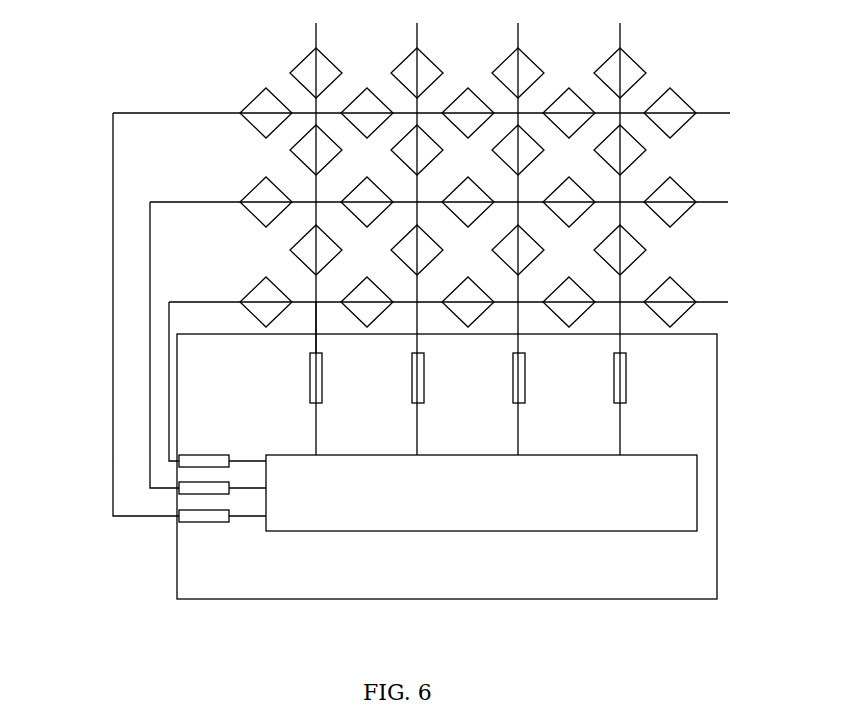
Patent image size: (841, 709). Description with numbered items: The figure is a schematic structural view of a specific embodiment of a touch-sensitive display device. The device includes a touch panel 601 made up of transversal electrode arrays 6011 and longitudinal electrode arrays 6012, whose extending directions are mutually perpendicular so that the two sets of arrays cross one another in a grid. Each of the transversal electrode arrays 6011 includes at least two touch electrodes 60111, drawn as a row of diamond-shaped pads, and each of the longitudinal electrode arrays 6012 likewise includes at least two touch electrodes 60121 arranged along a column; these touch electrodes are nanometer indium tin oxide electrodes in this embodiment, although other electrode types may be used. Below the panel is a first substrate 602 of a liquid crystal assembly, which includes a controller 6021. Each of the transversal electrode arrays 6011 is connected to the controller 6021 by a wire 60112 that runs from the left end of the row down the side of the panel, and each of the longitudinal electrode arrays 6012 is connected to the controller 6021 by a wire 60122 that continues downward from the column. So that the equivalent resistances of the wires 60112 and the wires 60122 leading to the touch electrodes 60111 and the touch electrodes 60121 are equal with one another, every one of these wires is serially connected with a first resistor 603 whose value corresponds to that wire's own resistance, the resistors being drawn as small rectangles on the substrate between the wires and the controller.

The touch panel 601 is at (110, 88).
The transversal electrode arrays 6011 is at (707, 111).
The touch electrodes 60111 is at (682, 183).
The wire 60112 is at (190, 112).
The longitudinal electrode arrays 6012 is at (622, 34).
The touch electrodes 60121 is at (643, 262).
The wire 60122 is at (317, 320).
The first substrate 602 is at (697, 566).
The controller 6021 is at (698, 505).
The first resistor 603 is at (190, 454).